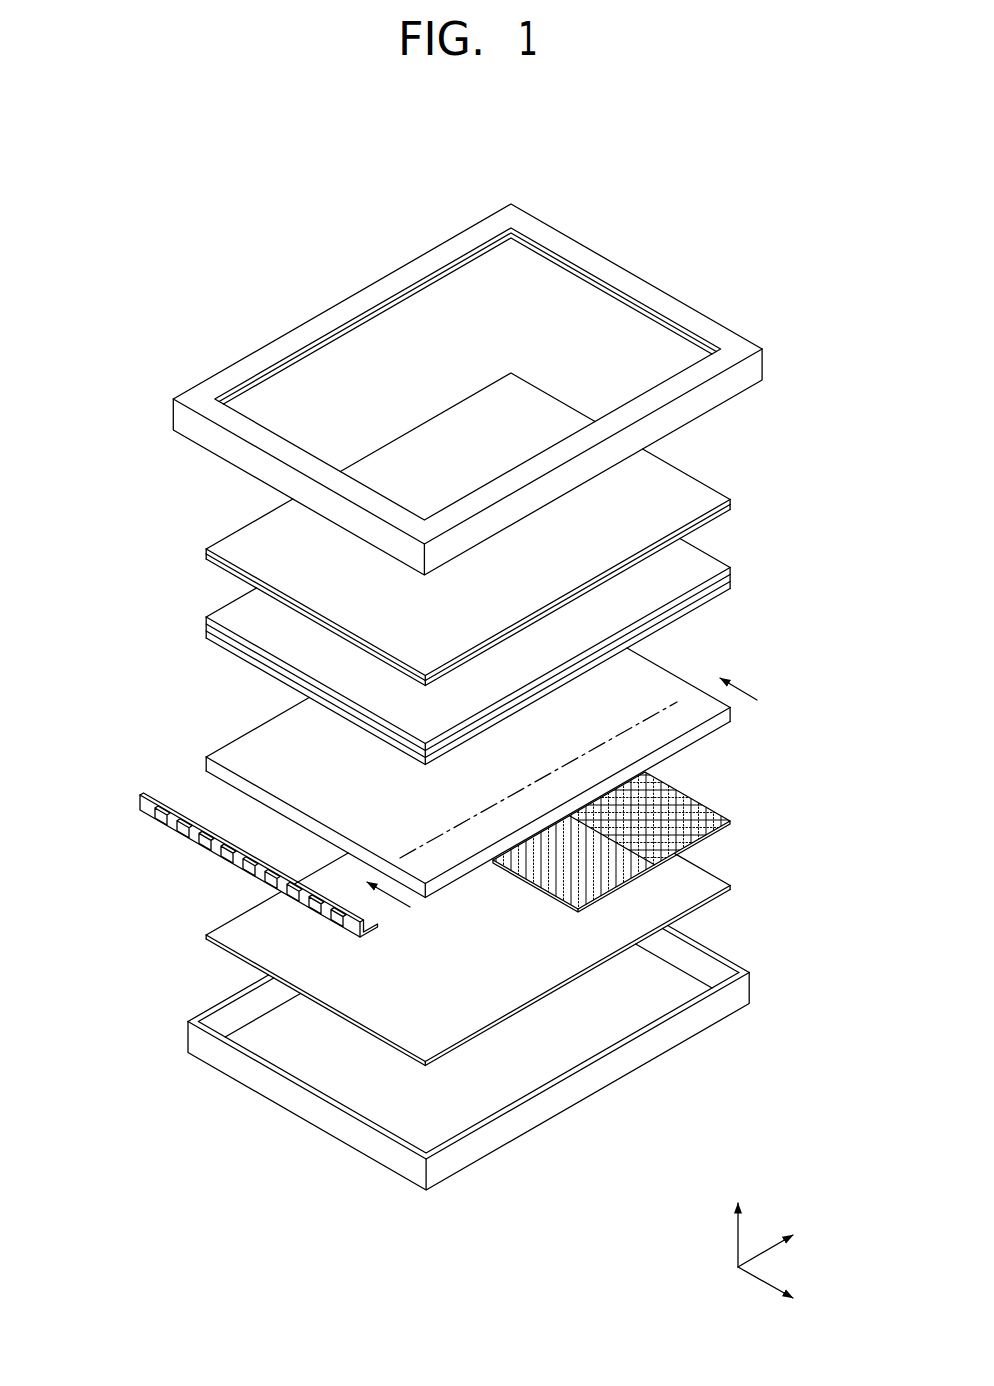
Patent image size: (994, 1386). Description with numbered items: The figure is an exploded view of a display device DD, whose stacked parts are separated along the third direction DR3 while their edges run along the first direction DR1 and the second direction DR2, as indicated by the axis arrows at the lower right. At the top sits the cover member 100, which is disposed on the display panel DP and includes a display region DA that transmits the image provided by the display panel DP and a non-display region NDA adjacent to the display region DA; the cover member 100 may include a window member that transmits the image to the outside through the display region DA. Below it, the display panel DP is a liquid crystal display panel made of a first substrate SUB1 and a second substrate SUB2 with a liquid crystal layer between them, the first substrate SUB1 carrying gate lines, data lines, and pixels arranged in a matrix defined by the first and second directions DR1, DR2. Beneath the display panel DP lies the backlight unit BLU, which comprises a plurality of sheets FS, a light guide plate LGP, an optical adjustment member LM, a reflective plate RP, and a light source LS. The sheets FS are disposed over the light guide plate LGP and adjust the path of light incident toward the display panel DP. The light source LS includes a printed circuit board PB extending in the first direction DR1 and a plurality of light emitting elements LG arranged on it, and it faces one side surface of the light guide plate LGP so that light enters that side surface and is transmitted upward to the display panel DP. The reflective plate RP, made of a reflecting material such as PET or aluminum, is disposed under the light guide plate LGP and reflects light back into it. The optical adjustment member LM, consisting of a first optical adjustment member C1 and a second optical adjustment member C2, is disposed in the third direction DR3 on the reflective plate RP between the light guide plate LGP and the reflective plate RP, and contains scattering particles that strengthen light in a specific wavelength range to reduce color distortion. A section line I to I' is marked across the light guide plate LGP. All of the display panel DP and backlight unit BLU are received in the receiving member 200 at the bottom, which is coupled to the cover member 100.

The display device DD is at (312, 255).
The cover member 100 is at (747, 348).
The display region DA is at (536, 273).
The non-display region NDA is at (634, 282).
The display panel DP is at (867, 467).
The second substrate SUB2 is at (732, 502).
The first substrate SUB1 is at (732, 507).
The backlight unit BLU is at (867, 568).
The sheets FS is at (752, 577).
The light guide plate LGP is at (677, 682).
The optical adjustment member LM is at (813, 753).
The first optical adjustment member C1 is at (632, 862).
The second optical adjustment member C2 is at (688, 802).
The reflective plate RP is at (731, 887).
The light source LS is at (68, 816).
The printed circuit board PB is at (145, 803).
The light emitting elements LG is at (155, 818).
The receiving member 200 is at (747, 987).
The section line I is at (393, 906).
The section line I' is at (746, 698).
The first direction DR1 is at (785, 1290).
The second direction DR2 is at (785, 1245).
The third direction DR3 is at (737, 1221).